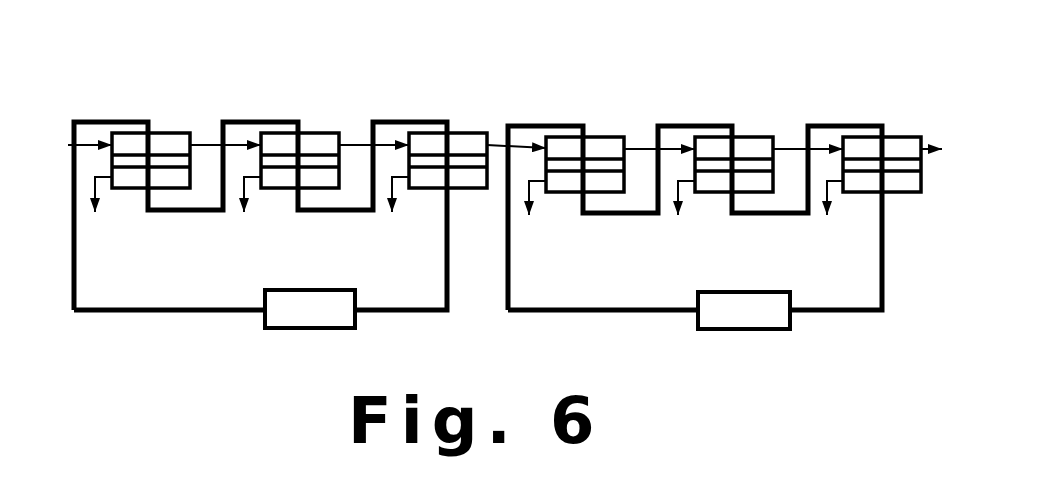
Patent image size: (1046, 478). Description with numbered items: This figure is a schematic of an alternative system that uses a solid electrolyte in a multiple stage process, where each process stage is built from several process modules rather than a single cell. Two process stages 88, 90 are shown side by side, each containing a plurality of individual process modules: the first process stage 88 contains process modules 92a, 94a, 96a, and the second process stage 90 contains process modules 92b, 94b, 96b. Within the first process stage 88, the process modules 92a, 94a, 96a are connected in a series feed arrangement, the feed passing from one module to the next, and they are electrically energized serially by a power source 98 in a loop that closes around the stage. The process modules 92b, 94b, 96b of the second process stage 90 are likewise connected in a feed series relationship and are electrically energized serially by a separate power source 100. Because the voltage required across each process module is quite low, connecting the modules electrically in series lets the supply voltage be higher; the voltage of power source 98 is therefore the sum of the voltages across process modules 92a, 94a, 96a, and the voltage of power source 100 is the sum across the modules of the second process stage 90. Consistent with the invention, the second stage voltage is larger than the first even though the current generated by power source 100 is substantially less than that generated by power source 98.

The first process stage 88 is at (210, 320).
The second process stage 90 is at (672, 325).
The process module 92a is at (176, 127).
The process module 94a is at (316, 127).
The process module 96a is at (467, 127).
The process module 92b is at (607, 131).
The process module 94b is at (752, 131).
The process module 96b is at (905, 131).
The power source 98 is at (280, 290).
The power source 100 is at (730, 292).